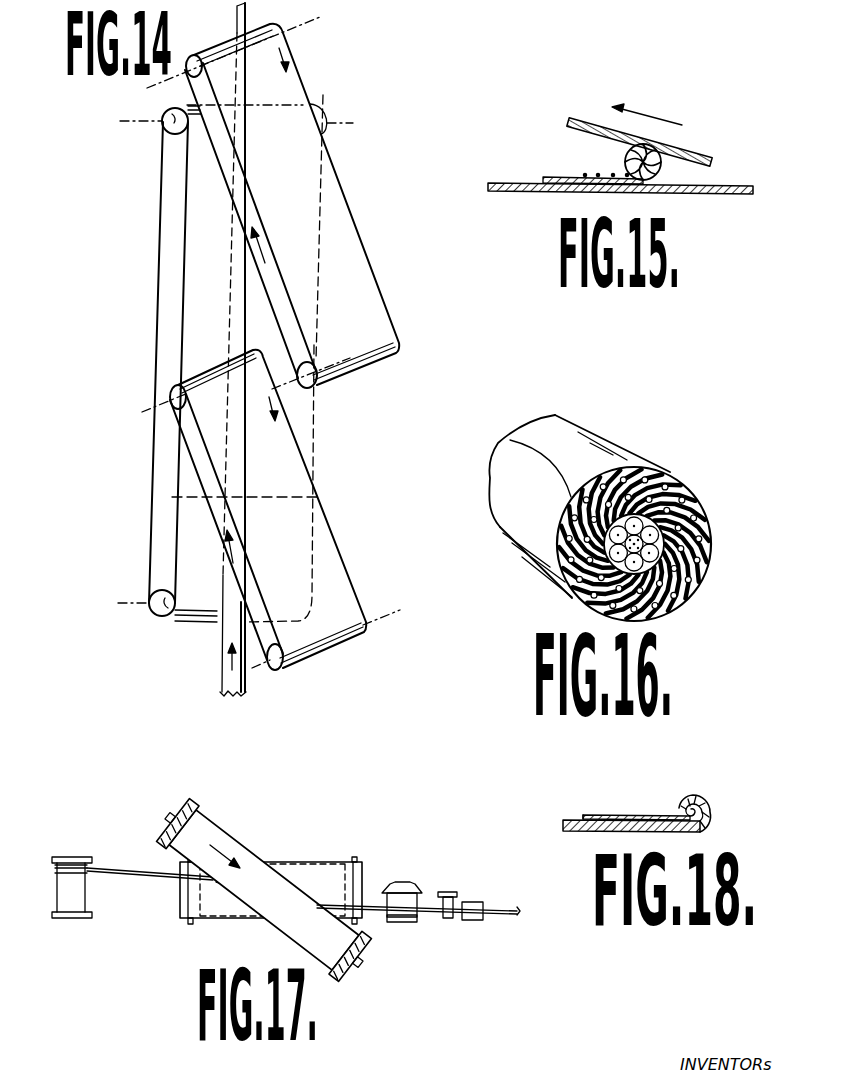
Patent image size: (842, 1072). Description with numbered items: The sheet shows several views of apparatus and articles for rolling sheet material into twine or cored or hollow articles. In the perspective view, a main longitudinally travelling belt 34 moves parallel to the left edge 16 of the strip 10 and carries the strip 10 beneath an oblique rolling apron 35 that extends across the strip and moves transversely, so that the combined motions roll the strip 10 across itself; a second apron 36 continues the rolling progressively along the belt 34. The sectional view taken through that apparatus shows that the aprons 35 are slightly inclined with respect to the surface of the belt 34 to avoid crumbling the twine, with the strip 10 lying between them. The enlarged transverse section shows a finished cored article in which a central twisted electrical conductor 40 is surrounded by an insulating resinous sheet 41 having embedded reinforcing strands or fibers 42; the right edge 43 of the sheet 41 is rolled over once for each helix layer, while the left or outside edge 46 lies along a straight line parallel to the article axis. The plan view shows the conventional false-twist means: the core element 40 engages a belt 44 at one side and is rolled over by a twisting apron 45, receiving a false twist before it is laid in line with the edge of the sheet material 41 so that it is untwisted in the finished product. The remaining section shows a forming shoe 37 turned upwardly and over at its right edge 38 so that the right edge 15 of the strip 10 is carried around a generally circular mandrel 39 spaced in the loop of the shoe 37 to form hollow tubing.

In FIG. 14, the strip 10 is at (237, 700).
In FIG. 15, the strip 10 is at (571, 176).
In FIG. 18, the strip 10 is at (615, 815).
In FIG. 14, the right edge of the strip 15 is at (248, 683).
In FIG. 18, the right edge of the strip 15 is at (678, 813).
In FIG. 14, the left edge of the strip 16 is at (221, 637).
In FIG. 14, the main longitudinally travelling belt 34 is at (183, 557).
In FIG. 15, the main longitudinally travelling belt 34 is at (723, 187).
In FIG. 14, the oblique rolling apron 35 is at (335, 578).
In FIG. 15, the oblique rolling apron 35 is at (690, 148).
In FIG. 14, the second apron 36 is at (384, 334).
In FIG. 18, the forming shoe 37 is at (707, 825).
In FIG. 18, the right edge of the forming shoe 38 is at (673, 803).
In FIG. 18, the mandrel 39 is at (710, 807).
In FIG. 16, the central twisted electrical conductor 40 is at (662, 535).
In FIG. 17, the central twisted electrical conductor 40 is at (117, 877).
In FIG. 16, the resinous sheet 41 is at (698, 497).
In FIG. 17, the resinous sheet 41 is at (505, 902).
In FIG. 16, the reinforcing strands or fibers 42 is at (670, 478).
In FIG. 16, the right edge of the strip of material 43 is at (574, 600).
In FIG. 17, the belt 44 is at (323, 872).
In FIG. 17, the twisting apron 45 is at (232, 840).
In FIG. 16, the left or outside edge 46 is at (530, 475).